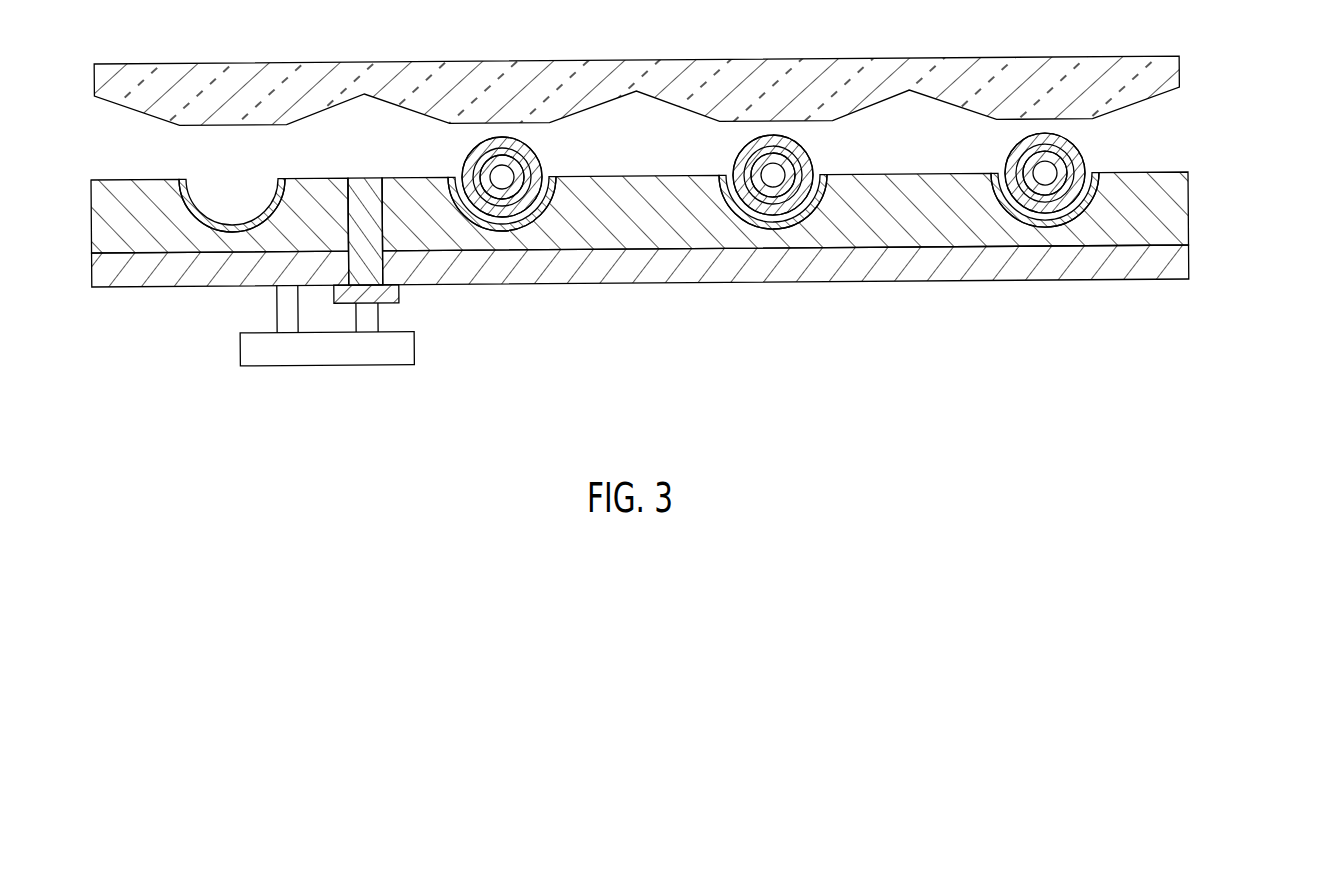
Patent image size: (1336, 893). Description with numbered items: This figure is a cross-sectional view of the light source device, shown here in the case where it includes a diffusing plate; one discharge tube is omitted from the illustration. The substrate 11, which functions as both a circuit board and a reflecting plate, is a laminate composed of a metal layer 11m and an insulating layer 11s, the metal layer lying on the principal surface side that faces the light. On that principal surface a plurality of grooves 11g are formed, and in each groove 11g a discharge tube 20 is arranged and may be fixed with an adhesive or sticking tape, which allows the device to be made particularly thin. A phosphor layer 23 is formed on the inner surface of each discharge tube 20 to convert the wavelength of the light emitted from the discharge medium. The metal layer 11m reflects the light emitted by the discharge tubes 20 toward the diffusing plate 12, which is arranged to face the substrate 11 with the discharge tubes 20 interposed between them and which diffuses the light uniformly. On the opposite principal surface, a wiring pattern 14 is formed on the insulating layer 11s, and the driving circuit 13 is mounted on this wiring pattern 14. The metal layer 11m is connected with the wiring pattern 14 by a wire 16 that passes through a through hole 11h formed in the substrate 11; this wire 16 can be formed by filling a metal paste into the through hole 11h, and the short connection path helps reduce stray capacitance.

The substrate 11 is at (707, 225).
The metal layer 11m is at (1168, 199).
The insulating layer 11s is at (682, 264).
The groove 11g is at (227, 180).
The through hole 11h is at (379, 262).
The diffusing plate 12 is at (1168, 68).
The driving circuit 13 is at (258, 355).
The wiring pattern 14 is at (343, 298).
The wire 16 is at (363, 181).
The discharge tube 20 is at (1070, 151).
The phosphor layer 23 is at (1087, 173).